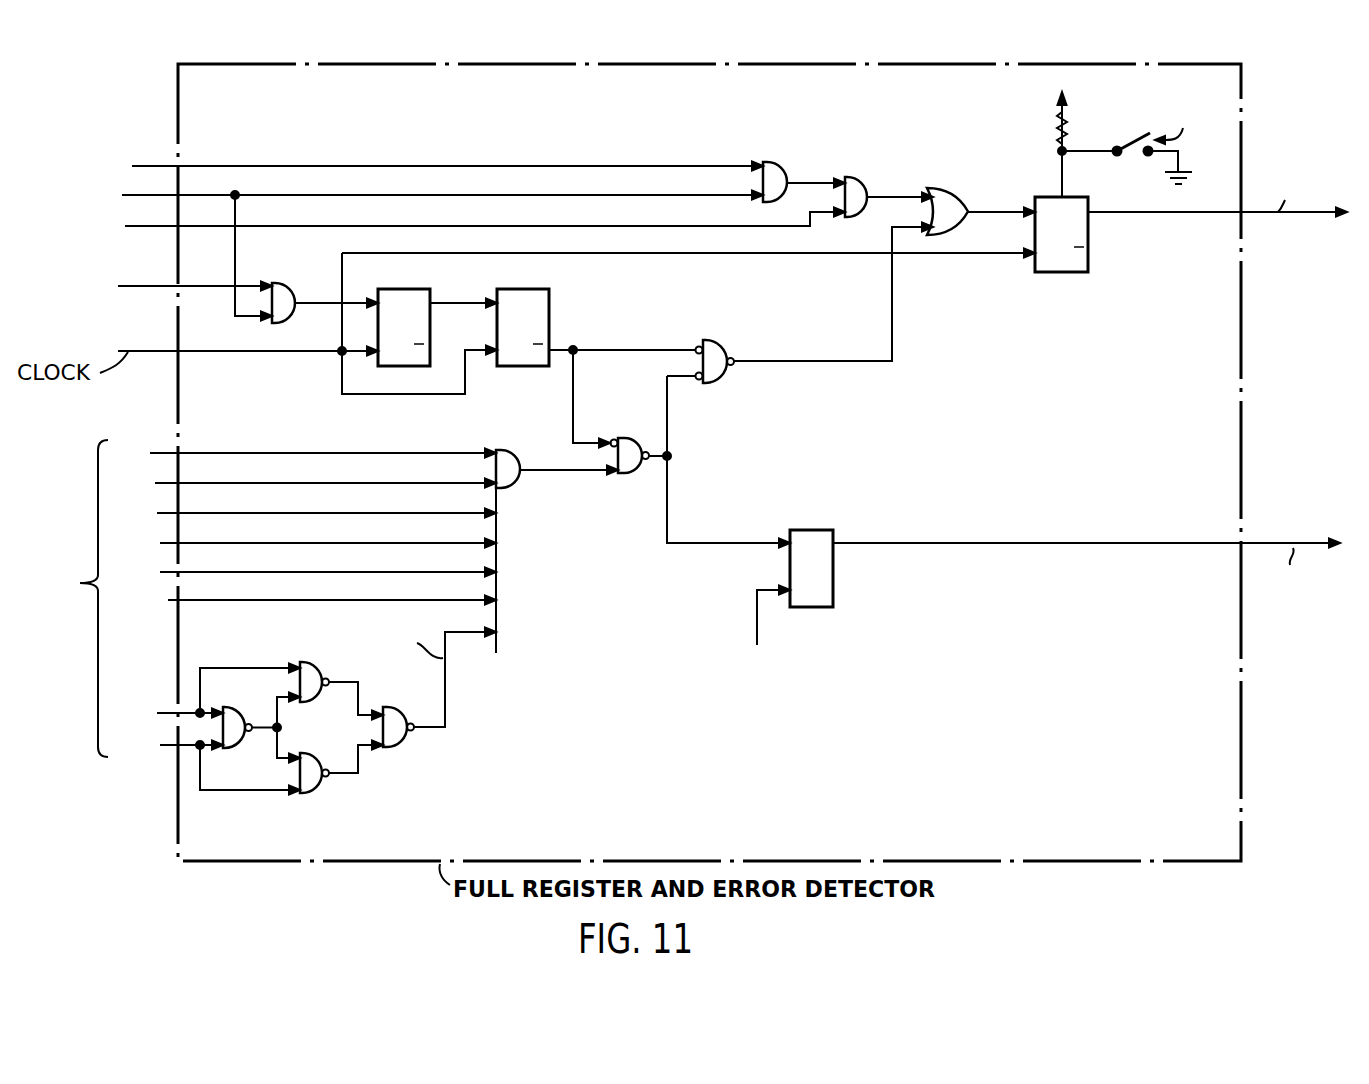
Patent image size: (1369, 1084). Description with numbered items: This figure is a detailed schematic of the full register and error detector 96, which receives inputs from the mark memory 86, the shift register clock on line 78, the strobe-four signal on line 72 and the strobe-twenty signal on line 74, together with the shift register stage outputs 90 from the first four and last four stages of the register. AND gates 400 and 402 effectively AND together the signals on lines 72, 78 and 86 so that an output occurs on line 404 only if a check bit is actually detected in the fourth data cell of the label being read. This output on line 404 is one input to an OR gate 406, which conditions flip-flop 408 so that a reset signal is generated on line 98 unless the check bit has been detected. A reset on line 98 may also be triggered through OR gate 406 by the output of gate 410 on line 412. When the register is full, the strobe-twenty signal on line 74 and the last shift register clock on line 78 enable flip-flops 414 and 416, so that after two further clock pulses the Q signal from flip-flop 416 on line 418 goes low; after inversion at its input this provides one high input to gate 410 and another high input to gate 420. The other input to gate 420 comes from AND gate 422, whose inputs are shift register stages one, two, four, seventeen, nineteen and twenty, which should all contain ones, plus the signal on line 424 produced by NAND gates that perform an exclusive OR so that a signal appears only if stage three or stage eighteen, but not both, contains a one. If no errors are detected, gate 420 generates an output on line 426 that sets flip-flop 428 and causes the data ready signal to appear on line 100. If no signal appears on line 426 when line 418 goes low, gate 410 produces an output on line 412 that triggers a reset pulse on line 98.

The mark memory 86 is at (138, 166).
The shift register clock line 78 is at (147, 197).
The strobe-4 signal line 72 is at (157, 227).
The strobe-20 signal line 74 is at (160, 290).
The outputs 90 is at (270, 598).
The full register and error detector 96 is at (1241, 722).
The reset signal line 98 is at (1300, 214).
The data ready signal line 100 is at (1278, 531).
The AND gate 400 is at (795, 150).
The AND gate 402 is at (858, 178).
The output line 404 is at (907, 193).
The OR gate 406 is at (955, 203).
The flip-flop 408 is at (1088, 240).
The AND gate 410 is at (728, 341).
The output line 412 is at (892, 318).
The flip-flop 414 is at (415, 288).
The flip-flop 416 is at (537, 288).
The output line 418 is at (612, 349).
The AND gate 420 is at (627, 437).
The AND gate 422 is at (530, 446).
The exclusive OR output line 424 is at (445, 700).
The output line 426 is at (667, 425).
The flip-flop 428 is at (833, 575).